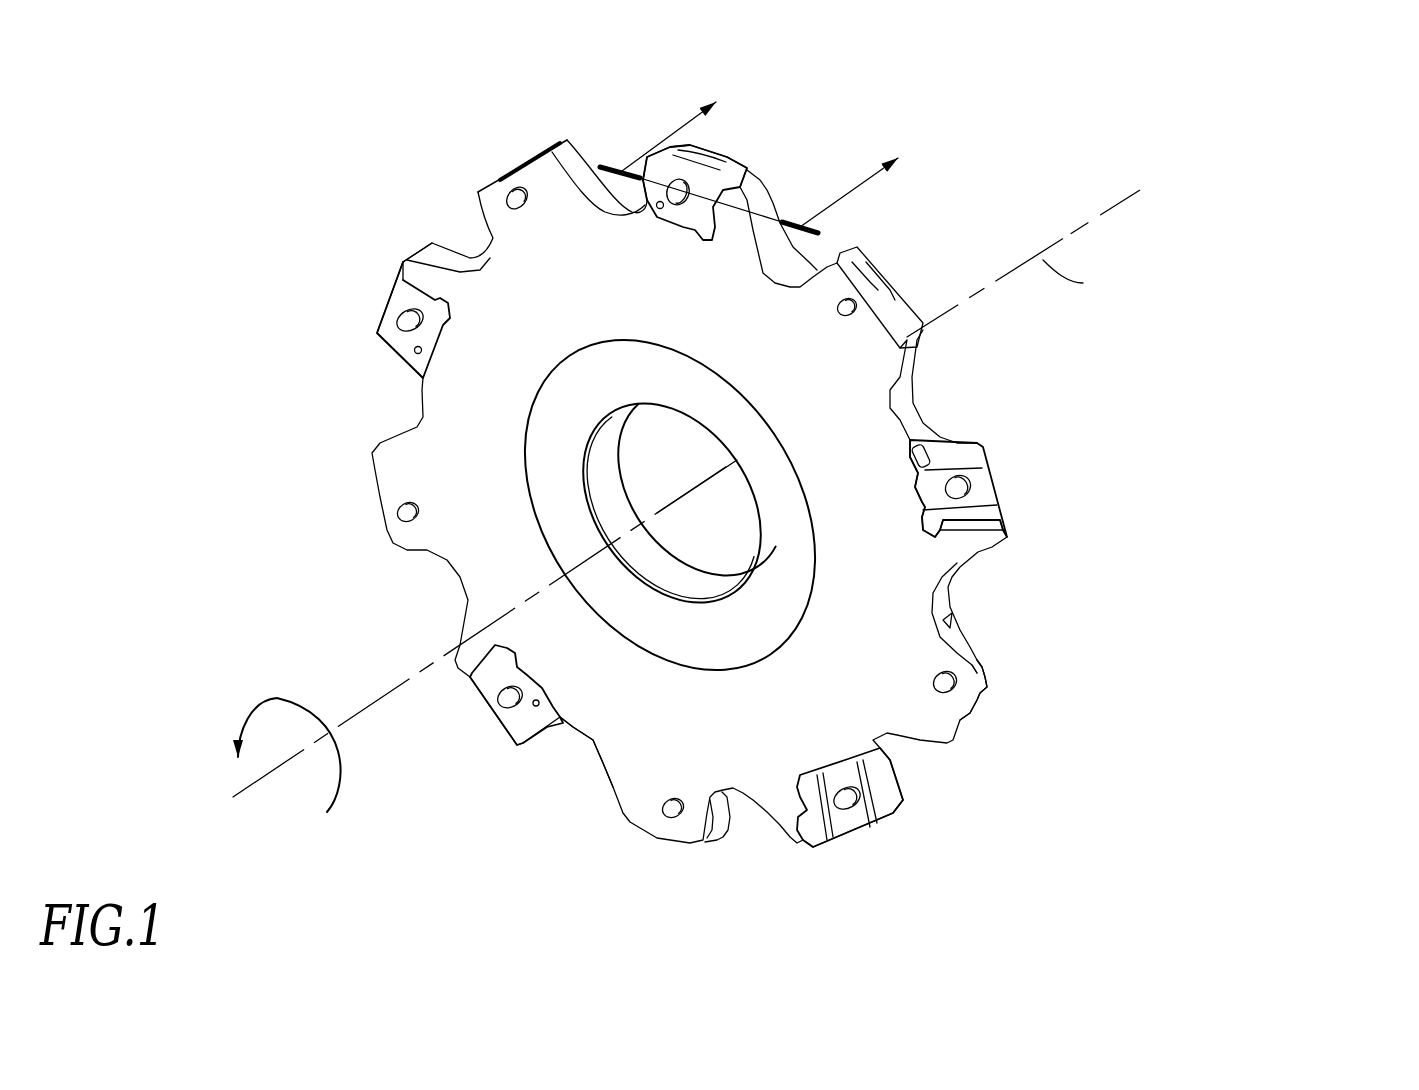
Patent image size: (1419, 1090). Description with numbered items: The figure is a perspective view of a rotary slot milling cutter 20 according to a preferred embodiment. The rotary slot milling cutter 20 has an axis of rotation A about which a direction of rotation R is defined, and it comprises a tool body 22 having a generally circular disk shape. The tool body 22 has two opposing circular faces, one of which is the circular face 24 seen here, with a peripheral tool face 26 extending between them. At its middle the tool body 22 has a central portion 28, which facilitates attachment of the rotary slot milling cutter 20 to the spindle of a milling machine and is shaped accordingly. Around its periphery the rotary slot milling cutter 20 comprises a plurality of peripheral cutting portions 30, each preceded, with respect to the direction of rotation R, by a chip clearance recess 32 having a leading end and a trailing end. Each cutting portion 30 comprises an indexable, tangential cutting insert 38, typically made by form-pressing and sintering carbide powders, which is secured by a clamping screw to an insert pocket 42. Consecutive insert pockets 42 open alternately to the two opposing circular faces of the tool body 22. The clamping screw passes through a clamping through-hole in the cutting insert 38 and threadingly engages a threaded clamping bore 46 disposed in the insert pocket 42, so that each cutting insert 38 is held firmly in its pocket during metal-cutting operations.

The rotary slot milling cutter 20 is at (1277, 225).
The tool body 22 is at (633, 677).
The circular face 24 is at (683, 720).
The peripheral tool face 26 is at (985, 702).
The central portion 28 is at (553, 463).
The peripheral cutting portion 30 is at (408, 246).
The chip clearance recess 32 is at (467, 223).
The cutting insert 38 is at (400, 343).
The insert pocket 42 is at (862, 825).
The threaded clamping bore 46 is at (672, 813).